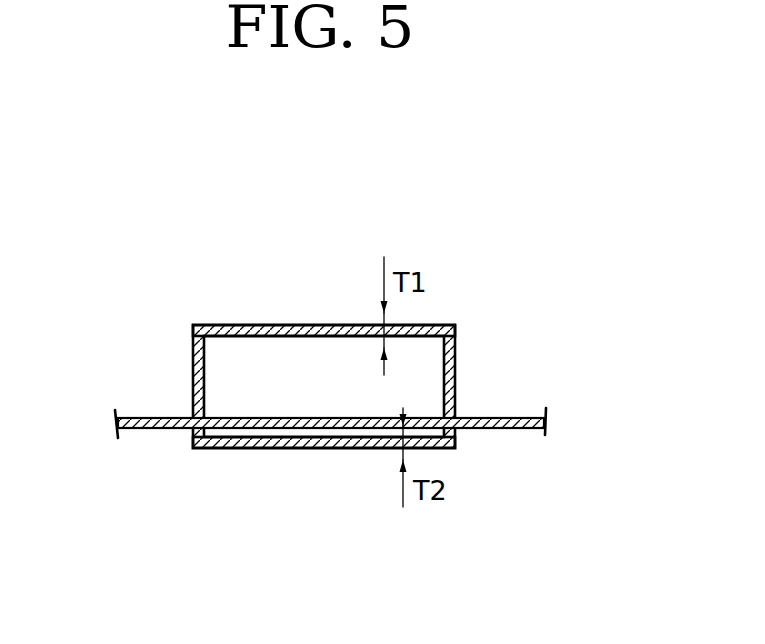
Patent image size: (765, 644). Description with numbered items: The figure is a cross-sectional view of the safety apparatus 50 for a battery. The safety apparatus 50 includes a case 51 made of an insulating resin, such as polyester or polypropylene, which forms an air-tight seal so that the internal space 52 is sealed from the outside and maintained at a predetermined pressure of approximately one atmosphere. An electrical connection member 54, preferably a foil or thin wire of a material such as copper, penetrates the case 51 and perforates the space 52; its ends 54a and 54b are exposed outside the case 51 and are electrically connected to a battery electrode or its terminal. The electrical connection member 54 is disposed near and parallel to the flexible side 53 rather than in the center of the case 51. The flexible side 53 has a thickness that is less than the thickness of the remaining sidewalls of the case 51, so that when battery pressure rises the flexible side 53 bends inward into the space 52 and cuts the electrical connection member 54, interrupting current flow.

The safety apparatus 50 is at (297, 382).
The case 51 is at (250, 324).
The internal space 52 is at (228, 372).
The flexible side 53 is at (300, 449).
The electrical connection member 54 is at (329, 418).
The end of electrical connection member 54a is at (143, 429).
The end of electrical connection member 54b is at (522, 429).